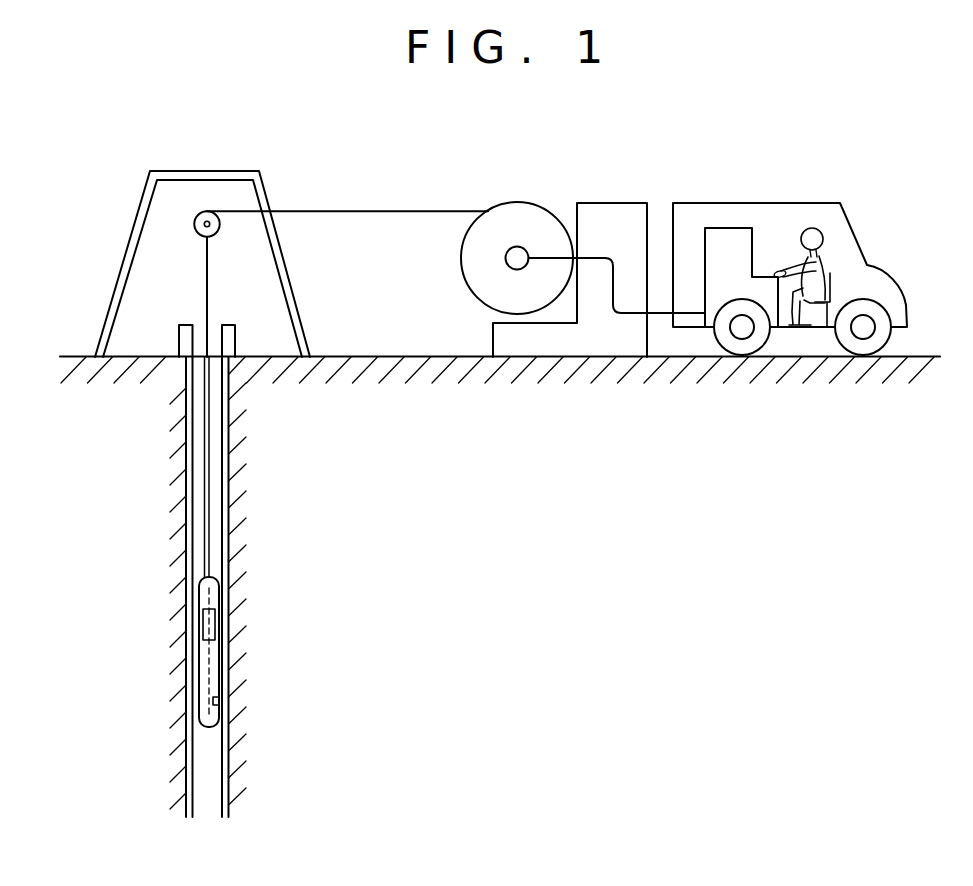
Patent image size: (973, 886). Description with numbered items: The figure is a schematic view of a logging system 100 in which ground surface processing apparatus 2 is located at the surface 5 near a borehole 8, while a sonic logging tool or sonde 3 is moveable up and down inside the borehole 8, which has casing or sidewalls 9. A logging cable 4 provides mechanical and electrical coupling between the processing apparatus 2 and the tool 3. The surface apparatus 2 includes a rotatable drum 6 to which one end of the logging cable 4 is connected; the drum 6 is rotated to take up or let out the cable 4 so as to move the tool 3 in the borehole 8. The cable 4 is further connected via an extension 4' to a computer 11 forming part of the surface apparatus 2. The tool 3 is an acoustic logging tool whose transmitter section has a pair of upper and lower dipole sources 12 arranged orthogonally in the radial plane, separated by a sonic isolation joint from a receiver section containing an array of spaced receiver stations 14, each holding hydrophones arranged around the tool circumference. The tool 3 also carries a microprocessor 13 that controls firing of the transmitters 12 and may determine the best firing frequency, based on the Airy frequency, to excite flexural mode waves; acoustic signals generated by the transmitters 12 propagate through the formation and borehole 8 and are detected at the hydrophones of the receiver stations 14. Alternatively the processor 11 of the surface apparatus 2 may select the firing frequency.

The logging system 100 is at (630, 700).
The ground surface processing apparatus 2 is at (665, 193).
The sonic logging tool 3 is at (211, 576).
The logging cable 4 is at (347, 366).
The extension 4' is at (617, 345).
The surface 5 is at (393, 355).
The rotatable drum 6 is at (535, 203).
The borehole 8 is at (200, 763).
The casing or sidewalls 9 is at (232, 800).
The computer 11 is at (750, 228).
The dipole sources 12 is at (218, 693).
The microprocessor 13 is at (240, 603).
The receiver stations 14 is at (212, 657).